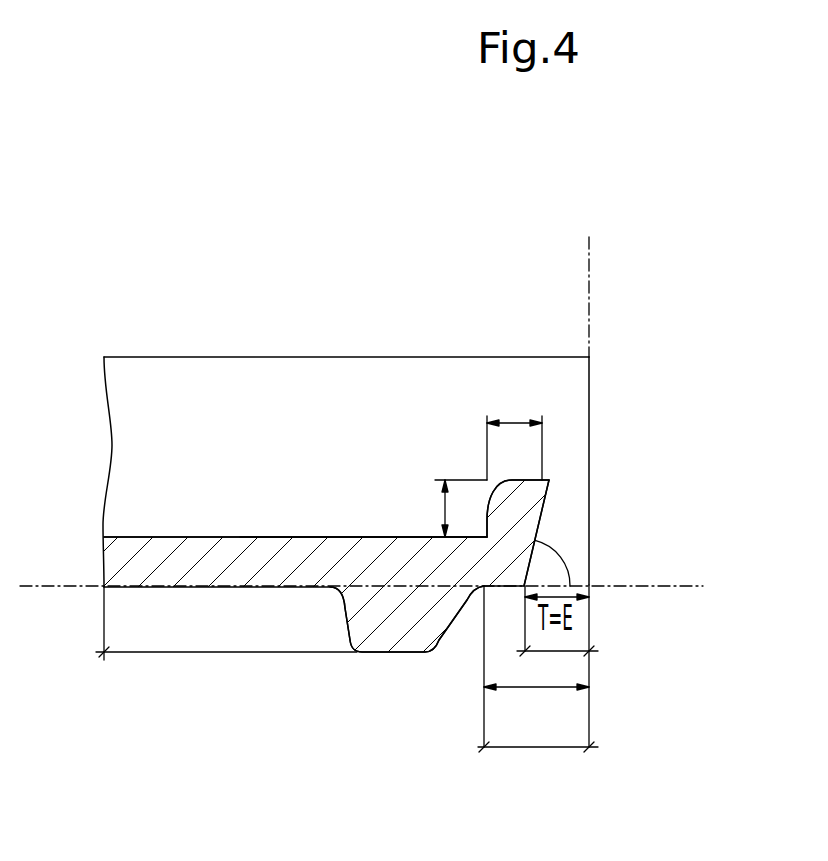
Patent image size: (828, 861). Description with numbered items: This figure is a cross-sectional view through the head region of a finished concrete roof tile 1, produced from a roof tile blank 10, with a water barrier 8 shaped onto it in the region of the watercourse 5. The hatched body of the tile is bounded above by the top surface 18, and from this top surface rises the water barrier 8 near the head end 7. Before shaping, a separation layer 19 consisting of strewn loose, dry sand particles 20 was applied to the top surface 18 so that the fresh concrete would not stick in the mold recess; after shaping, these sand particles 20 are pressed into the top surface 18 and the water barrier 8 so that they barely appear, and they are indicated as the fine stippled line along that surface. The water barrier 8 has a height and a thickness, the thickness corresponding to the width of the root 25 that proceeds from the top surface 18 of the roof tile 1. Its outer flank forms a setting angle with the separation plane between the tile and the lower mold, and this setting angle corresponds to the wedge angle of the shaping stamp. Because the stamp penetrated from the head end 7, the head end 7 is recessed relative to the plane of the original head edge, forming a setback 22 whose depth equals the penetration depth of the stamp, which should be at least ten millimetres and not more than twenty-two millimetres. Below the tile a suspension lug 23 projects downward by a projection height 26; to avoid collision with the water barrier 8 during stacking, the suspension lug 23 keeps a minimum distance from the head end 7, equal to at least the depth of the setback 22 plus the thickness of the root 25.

The roof tile 1 is at (318, 397).
The roof tile blank 10 is at (105, 325).
The watercourse 5 is at (104, 541).
The head end 7 is at (595, 358).
The water barrier 8 is at (523, 505).
The top surface 18 is at (227, 535).
The separation layer 19 is at (363, 407).
The sand particle 20 is at (330, 537).
The setback 22 is at (558, 652).
The suspension lug 23 is at (397, 618).
The root of the water barrier 25 is at (518, 533).
The projection height of the suspension lug 26 is at (212, 623).